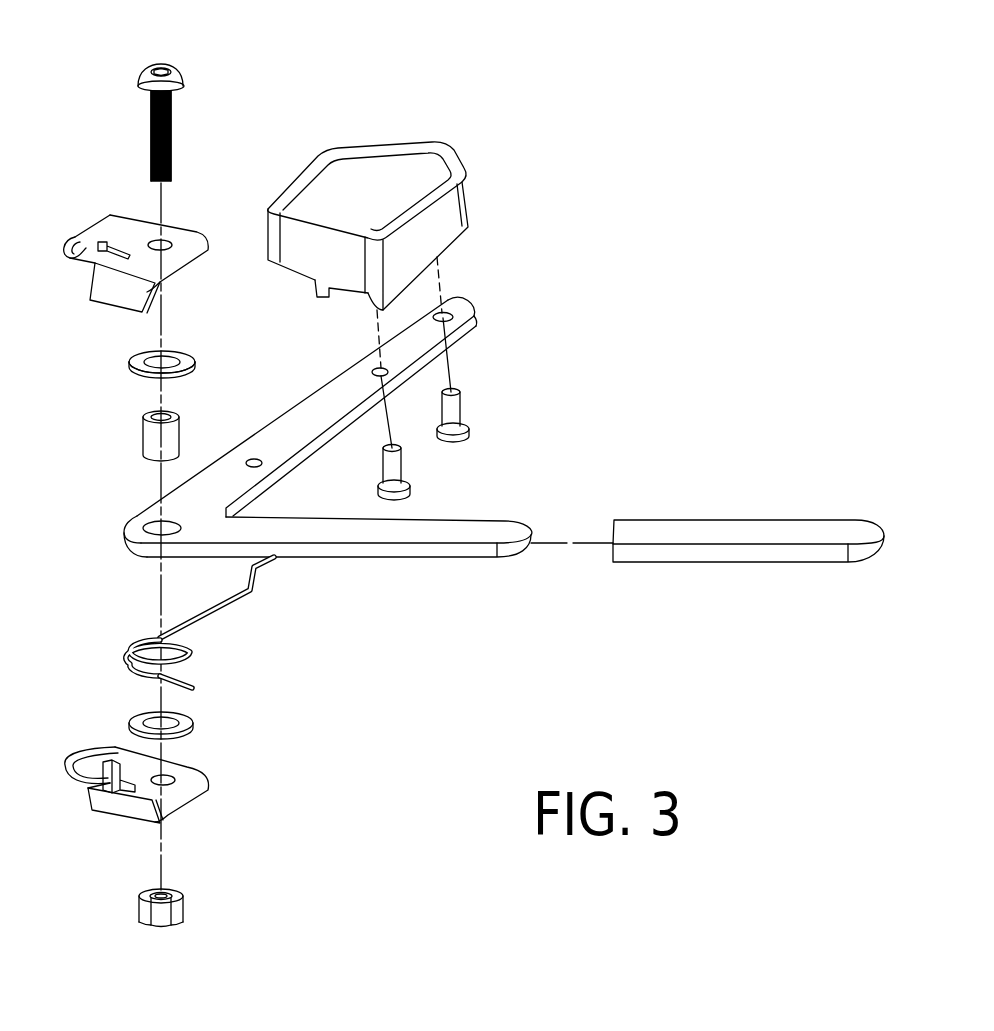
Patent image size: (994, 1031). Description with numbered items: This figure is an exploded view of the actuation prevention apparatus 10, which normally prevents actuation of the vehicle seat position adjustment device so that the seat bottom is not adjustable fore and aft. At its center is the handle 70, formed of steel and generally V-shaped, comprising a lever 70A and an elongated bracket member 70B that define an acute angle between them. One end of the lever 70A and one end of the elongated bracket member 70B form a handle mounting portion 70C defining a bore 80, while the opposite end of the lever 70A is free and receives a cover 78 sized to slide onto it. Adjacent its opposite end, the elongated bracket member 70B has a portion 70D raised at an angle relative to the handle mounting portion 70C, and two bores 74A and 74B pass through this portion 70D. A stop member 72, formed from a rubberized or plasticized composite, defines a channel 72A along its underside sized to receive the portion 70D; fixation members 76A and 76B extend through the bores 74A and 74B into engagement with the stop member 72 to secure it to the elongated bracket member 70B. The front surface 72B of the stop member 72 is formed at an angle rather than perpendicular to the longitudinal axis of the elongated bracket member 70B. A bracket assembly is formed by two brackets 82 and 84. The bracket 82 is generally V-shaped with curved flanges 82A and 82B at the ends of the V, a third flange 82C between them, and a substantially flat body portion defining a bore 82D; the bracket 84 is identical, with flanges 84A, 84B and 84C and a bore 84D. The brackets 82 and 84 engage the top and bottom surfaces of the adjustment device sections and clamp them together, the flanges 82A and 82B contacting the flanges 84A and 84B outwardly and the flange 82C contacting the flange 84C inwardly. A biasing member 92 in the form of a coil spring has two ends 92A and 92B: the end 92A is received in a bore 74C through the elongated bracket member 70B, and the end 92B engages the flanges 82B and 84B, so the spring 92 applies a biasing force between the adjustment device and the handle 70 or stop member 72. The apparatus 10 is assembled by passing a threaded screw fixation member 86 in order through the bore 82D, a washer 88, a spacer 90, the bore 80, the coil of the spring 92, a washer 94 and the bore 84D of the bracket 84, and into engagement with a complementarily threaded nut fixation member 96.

The actuation prevention apparatus 10 is at (685, 146).
The handle 70 is at (303, 452).
The lever 70A is at (397, 560).
The elongated bracket member 70B is at (287, 418).
The handle mounting portion 70C is at (125, 535).
The raised portion of the elongated bracket member 70D is at (475, 323).
The stop member 72 is at (416, 226).
The channel 72A is at (347, 297).
The front surface of the stop member 72B is at (378, 142).
The bore 74A is at (452, 316).
The bore 74B is at (373, 372).
The bore 74C is at (262, 464).
The fixation member 76A is at (462, 405).
The fixation member 76B is at (402, 467).
The cover 78 is at (740, 565).
The bore 80 is at (150, 523).
The bracket 82 is at (154, 254).
The curved flange 82A is at (82, 263).
The curved flange 82B is at (140, 312).
The third flange 82C is at (120, 247).
The bore 82D is at (173, 247).
The bracket 84 is at (176, 770).
The flange 84A is at (85, 742).
The flange 84B is at (130, 802).
The flange 84C is at (108, 762).
The bore 84D is at (175, 783).
The fixation member 86 is at (177, 70).
The washer 88 is at (130, 370).
The spacer 90 is at (142, 438).
The biasing member 92 is at (233, 623).
The spring end 92A is at (270, 572).
The spring end 92B is at (212, 650).
The washer 94 is at (196, 724).
The fixation member 96 is at (184, 908).